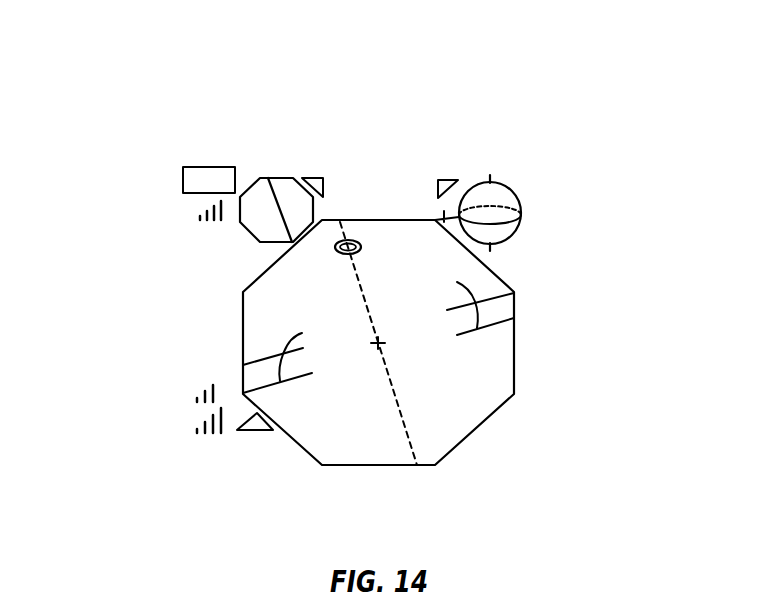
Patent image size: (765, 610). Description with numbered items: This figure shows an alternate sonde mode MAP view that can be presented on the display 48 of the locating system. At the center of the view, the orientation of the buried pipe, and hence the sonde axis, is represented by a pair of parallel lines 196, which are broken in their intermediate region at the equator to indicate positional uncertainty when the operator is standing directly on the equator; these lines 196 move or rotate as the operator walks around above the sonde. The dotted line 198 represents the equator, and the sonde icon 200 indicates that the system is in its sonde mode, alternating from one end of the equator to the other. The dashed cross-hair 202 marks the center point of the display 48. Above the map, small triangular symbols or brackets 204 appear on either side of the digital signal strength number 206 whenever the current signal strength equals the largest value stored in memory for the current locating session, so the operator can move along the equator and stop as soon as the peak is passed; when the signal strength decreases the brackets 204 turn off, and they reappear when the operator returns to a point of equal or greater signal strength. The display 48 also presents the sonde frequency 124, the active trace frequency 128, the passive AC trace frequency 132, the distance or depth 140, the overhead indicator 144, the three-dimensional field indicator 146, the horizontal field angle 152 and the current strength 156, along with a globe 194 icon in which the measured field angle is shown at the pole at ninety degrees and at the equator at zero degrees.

The display 48 is at (152, 55).
The sonde frequency 124 is at (193, 167).
The active trace frequency 128 is at (177, 243).
The passive (AC) trace frequency 132 is at (188, 302).
The distance (depth) 140 is at (202, 465).
The overhead indicator 144 is at (278, 440).
The 3D field indicator 146 is at (262, 172).
The horizontal field angle 152 is at (522, 428).
The current strength 156 is at (522, 458).
The globe 194 is at (512, 170).
The parallel lines 196 is at (294, 339).
The dotted line 198 is at (397, 410).
The sonde icon 200 is at (348, 255).
The dashed cross-hair 202 is at (385, 345).
The triangular symbols or brackets 204 is at (307, 165).
The digital signal strength number 206 is at (378, 180).